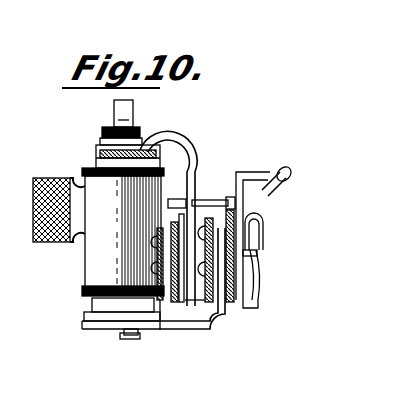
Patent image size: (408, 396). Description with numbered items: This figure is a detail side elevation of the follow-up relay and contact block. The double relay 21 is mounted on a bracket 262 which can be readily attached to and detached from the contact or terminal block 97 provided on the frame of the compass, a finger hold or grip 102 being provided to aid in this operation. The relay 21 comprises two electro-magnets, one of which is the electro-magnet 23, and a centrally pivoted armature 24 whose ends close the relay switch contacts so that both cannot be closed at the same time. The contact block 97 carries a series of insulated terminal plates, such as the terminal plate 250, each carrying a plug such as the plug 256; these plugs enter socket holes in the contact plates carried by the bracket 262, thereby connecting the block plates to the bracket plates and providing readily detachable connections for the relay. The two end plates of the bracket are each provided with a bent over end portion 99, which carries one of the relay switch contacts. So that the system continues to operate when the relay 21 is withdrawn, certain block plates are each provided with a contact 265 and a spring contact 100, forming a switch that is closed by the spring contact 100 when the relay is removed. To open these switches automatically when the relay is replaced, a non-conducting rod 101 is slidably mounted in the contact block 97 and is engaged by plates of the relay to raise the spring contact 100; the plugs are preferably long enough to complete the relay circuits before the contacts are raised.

The double relay 21 is at (82, 291).
The electro-magnet 23 is at (123, 232).
The pivoted armature 24 is at (97, 145).
The contact block 97 is at (161, 284).
The bent over end portion 99 is at (178, 158).
The spring contact 100 is at (258, 272).
The non-conducting rod 101 is at (263, 243).
The finger hold 102 is at (33, 214).
The terminal plate 250 is at (243, 192).
The plug 256 is at (203, 204).
The bracket 262 is at (160, 330).
The contact 265 is at (258, 304).